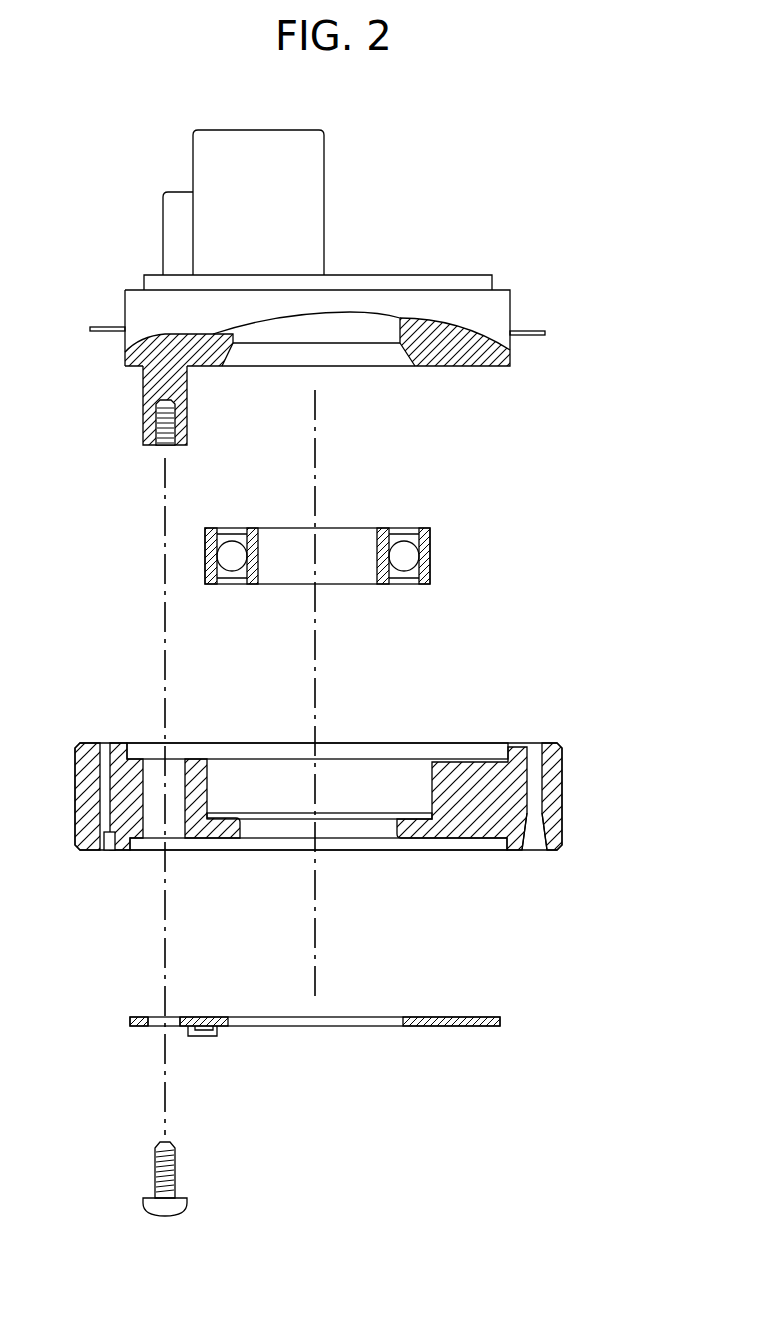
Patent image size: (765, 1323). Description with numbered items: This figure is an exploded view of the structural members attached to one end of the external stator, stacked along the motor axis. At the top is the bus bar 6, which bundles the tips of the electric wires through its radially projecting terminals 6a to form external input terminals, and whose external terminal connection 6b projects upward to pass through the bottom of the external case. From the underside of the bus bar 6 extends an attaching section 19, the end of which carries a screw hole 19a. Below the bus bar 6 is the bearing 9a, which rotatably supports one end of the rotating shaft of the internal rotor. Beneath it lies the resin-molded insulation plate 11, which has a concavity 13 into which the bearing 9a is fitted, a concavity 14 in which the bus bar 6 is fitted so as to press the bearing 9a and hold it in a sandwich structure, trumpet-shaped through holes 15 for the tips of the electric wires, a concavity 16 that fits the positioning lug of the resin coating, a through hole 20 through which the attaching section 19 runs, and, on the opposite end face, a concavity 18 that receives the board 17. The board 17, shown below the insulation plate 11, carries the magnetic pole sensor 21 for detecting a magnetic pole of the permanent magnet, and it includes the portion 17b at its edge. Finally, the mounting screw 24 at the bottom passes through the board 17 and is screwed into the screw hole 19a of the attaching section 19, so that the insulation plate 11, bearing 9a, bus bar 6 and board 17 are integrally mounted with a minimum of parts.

The bus bar 6 is at (403, 300).
The terminals 6a is at (112, 325).
The external terminal connection 6b is at (324, 170).
The bearing 9a is at (430, 555).
The insulation plate 11 is at (563, 795).
The concavity 13 is at (422, 780).
The concavity 14 is at (508, 757).
The through holes 15 is at (538, 768).
The concavity 16 is at (108, 852).
The board 17 is at (460, 1028).
The hole 17b is at (150, 1028).
The concavity 18 is at (503, 845).
The attaching section 19 is at (143, 400).
The screw hole 19a is at (159, 433).
The through hole 20 is at (175, 838).
The magnetic pole sensor 21 is at (205, 1036).
The mounting screw 24 is at (152, 1207).